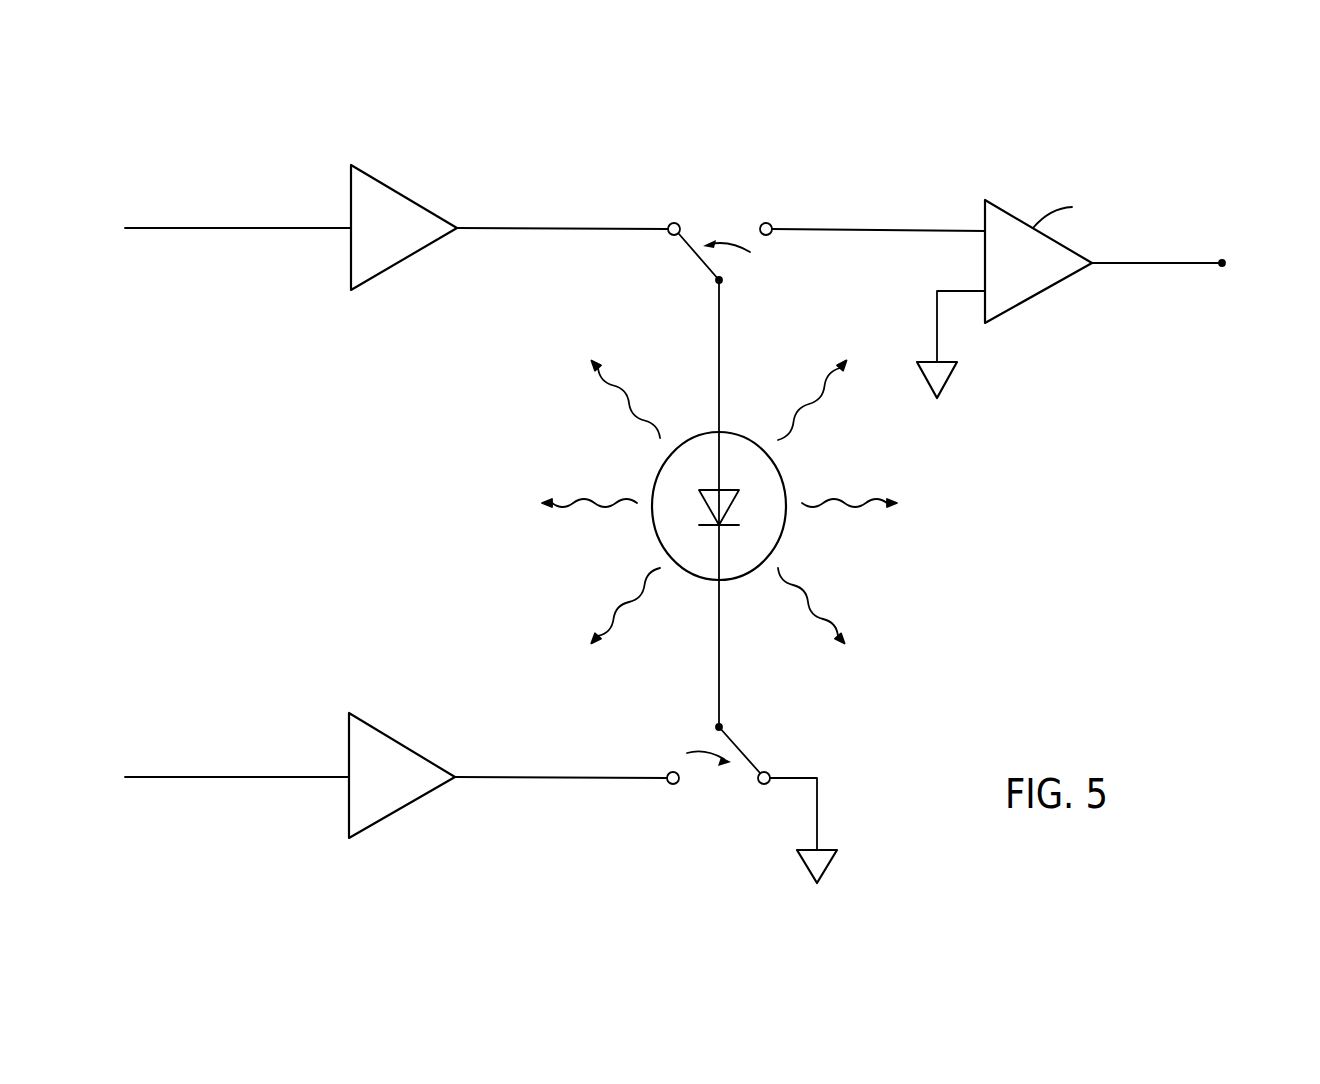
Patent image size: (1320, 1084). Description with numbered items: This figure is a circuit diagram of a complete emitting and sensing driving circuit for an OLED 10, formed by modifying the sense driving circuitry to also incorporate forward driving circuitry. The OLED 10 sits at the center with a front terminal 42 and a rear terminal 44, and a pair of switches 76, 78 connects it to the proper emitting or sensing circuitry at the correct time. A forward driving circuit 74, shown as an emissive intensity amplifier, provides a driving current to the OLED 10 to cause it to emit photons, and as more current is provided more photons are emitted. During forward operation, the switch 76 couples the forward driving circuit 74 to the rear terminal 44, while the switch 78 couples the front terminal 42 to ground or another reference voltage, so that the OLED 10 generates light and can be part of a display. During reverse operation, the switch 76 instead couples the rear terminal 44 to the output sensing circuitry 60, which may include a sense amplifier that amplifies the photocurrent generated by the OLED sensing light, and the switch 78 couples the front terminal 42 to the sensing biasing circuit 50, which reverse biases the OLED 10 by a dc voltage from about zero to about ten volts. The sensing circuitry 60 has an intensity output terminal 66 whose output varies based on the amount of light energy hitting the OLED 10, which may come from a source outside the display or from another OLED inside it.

The output sensing circuitry 60 is at (1144, 138).
The forward driving circuit 74 is at (401, 193).
The switch 76 is at (702, 268).
The rear terminal 44 is at (722, 281).
The OLED 10 is at (778, 468).
The front terminal 42 is at (723, 725).
The switch 78 is at (741, 749).
The sensing biasing circuit 50 is at (401, 741).
The intensity output terminal 66 is at (1225, 266).